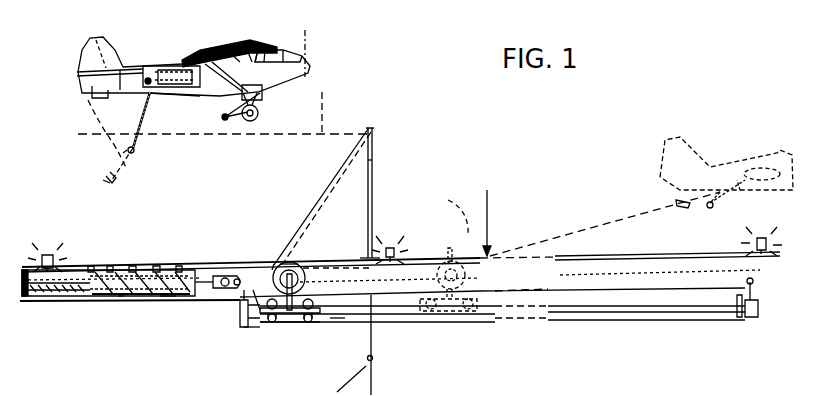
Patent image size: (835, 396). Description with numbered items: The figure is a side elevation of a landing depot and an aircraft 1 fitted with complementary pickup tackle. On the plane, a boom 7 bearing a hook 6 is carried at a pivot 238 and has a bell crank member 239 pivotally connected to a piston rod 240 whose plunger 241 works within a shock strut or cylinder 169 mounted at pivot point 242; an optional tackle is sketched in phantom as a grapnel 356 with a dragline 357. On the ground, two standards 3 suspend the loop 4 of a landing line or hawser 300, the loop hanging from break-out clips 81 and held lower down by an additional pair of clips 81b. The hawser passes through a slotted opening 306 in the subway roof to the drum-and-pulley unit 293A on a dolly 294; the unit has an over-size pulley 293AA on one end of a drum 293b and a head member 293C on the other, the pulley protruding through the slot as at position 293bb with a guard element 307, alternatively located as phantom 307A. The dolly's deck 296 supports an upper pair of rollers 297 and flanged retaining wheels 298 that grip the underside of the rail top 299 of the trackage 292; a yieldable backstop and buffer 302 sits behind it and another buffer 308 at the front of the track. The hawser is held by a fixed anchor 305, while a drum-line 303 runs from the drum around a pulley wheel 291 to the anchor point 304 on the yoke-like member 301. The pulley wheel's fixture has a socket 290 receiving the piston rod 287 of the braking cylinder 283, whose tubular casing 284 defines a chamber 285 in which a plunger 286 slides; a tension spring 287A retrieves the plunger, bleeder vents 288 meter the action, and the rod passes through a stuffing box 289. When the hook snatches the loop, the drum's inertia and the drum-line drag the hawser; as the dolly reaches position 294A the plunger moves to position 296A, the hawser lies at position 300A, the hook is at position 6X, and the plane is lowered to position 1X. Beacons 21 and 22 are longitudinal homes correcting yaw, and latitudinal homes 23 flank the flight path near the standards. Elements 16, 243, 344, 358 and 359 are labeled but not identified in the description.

The aircraft 1 is at (241, 38).
The lowered position of plane 1X is at (743, 163).
The standards 3 is at (374, 181).
The loop 4 is at (352, 151).
The hook 6 is at (140, 152).
The position of hook 6X is at (680, 205).
The boom 7 is at (146, 124).
The landing gear strut 16 is at (251, 122).
The beacon 21 is at (50, 265).
The beacon 22 is at (768, 242).
The latitudinal homes 23 is at (399, 244).
The break-out clips 81 is at (367, 127).
The additional pair of clips 81b is at (372, 172).
The shock strut or cylinder 169 is at (190, 52).
The pivot 238 is at (175, 92).
The bell crank member 239 is at (118, 92).
The piston rod 240 is at (146, 78).
The plunger 241 is at (170, 72).
The pivot point 242 is at (262, 104).
The guide line 243 is at (86, 113).
The cylinder 283 is at (142, 298).
The tubular casing 284 is at (97, 298).
The chamber 285 is at (167, 298).
The plunger 286 is at (47, 255).
The piston rod 287 is at (134, 246).
The tension spring 287A is at (170, 300).
The bleeder vents 288 is at (95, 268).
The stuffing box 289 is at (212, 276).
The socket 290 is at (248, 268).
The pulley wheel 291 is at (240, 318).
The trackage 292 is at (607, 314).
The drum-and-pulley unit 293A is at (316, 278).
The over-size pulley 293AA is at (300, 266).
The drum 293b is at (280, 263).
The position of pulley 293bb is at (449, 250).
The head member 293C is at (340, 314).
The dolly 294 is at (293, 318).
The position of dolly 294A is at (451, 312).
The deck 296 is at (280, 314).
The position of plunger 296A is at (116, 355).
The upper pair of rollers 297 is at (252, 322).
The retaining wheels 298 is at (270, 325).
The rail top 299 is at (393, 313).
The hawser 300 is at (313, 257).
The position of hawser 300A is at (497, 240).
The yoke-like member 301 is at (244, 206).
The yieldable backstop and buffer 302 is at (236, 320).
The drum-line 303 is at (258, 289).
The anchor point 304 is at (272, 308).
The fixed anchor 305 is at (750, 280).
The slotted opening 306 is at (489, 190).
The guard element 307 is at (472, 200).
The phantom guide 307A is at (446, 268).
The buffer 308 is at (732, 310).
The bracket 344 is at (92, 95).
The grapnel 356 is at (102, 181).
The dragline 357 is at (123, 153).
The hook 358 is at (132, 168).
The reference line 359 is at (324, 85).